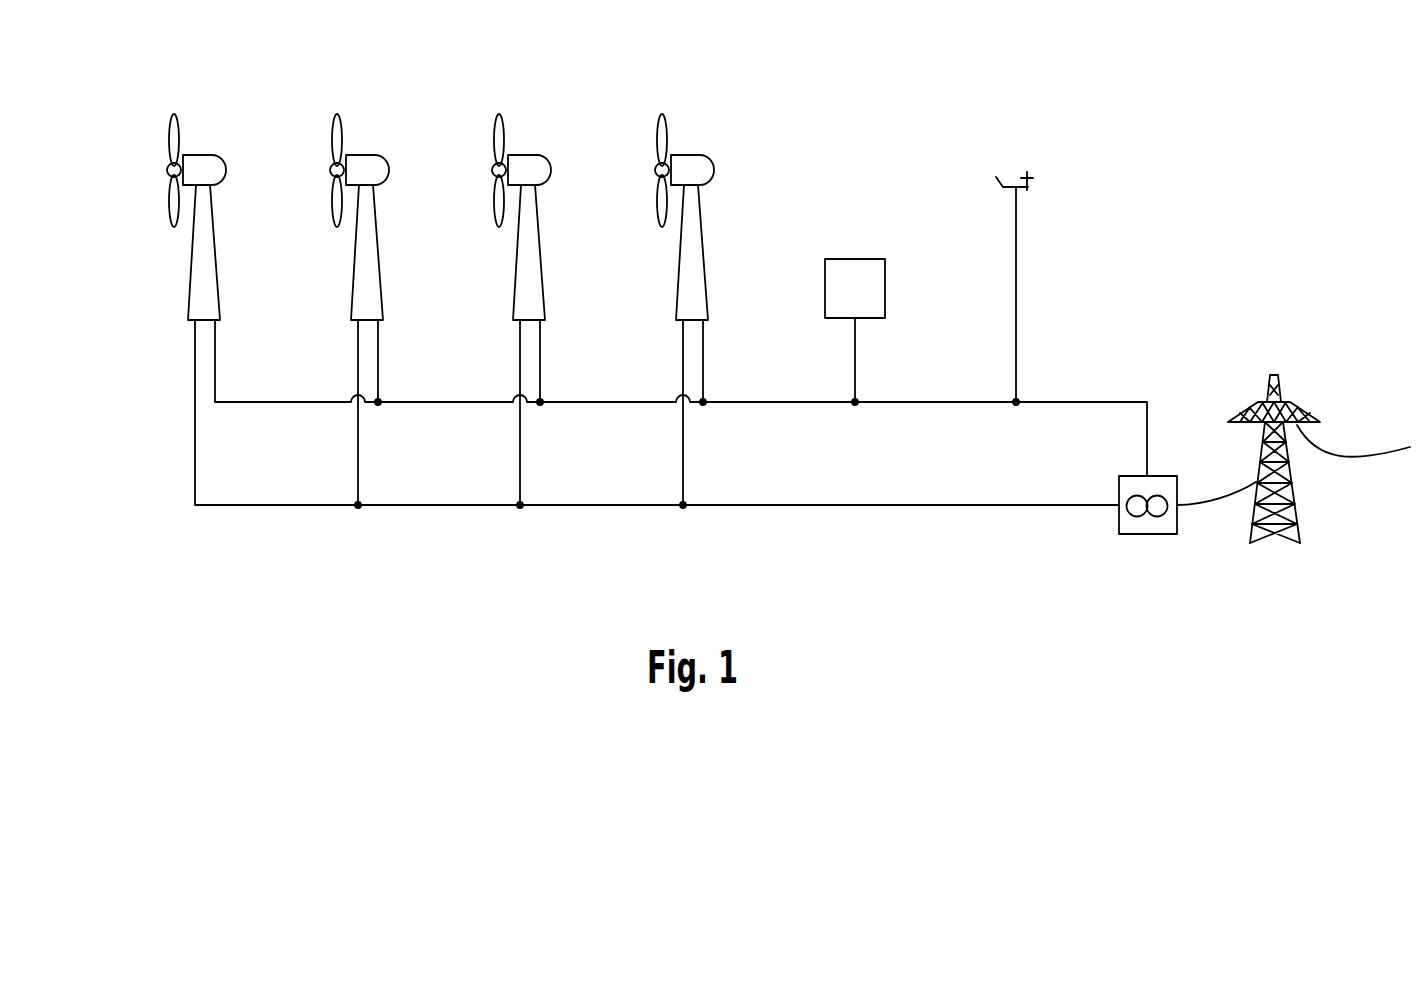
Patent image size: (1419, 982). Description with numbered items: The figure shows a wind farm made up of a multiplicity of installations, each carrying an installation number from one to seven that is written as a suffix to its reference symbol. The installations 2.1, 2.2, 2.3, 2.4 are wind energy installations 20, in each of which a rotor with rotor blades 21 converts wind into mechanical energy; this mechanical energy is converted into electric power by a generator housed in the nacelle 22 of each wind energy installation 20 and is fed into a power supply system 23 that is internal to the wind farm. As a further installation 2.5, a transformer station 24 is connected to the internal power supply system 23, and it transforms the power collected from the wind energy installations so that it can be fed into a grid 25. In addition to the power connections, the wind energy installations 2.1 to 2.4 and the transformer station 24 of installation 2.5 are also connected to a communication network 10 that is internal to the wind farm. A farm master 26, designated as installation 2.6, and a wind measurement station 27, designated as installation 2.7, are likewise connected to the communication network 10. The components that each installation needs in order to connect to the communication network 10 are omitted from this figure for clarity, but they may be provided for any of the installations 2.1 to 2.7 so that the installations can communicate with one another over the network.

The communication network 10 is at (1078, 402).
The wind energy installation 20 is at (149, 231).
The rotor blades 21 is at (170, 133).
The nacelle 22 is at (218, 168).
The power supply system 23 is at (195, 442).
The transformer station 24 is at (1148, 534).
The grid 25 is at (1341, 551).
The farm master 26 is at (870, 302).
The wind measurement station 27 is at (1016, 212).
The installation 2.1 is at (208, 124).
The installation 2.2 is at (371, 124).
The installation 2.3 is at (534, 124).
The installation 2.4 is at (697, 124).
The installation 2.5 is at (1178, 450).
The installation 2.6 is at (856, 222).
The installation 2.7 is at (1018, 138).